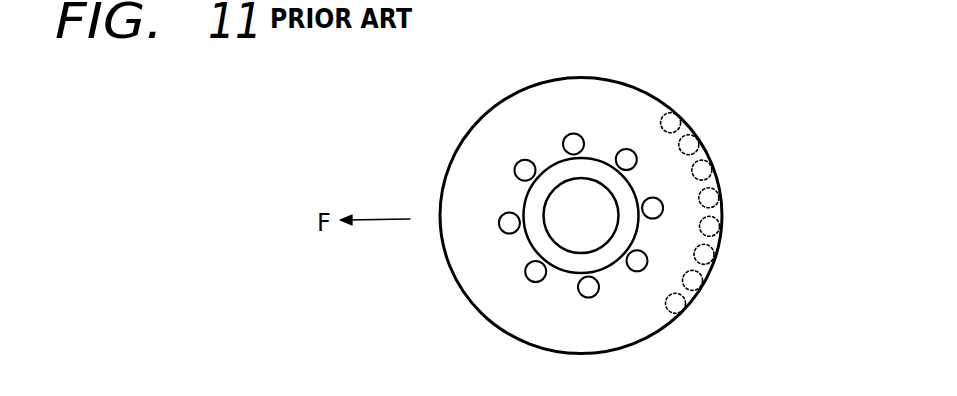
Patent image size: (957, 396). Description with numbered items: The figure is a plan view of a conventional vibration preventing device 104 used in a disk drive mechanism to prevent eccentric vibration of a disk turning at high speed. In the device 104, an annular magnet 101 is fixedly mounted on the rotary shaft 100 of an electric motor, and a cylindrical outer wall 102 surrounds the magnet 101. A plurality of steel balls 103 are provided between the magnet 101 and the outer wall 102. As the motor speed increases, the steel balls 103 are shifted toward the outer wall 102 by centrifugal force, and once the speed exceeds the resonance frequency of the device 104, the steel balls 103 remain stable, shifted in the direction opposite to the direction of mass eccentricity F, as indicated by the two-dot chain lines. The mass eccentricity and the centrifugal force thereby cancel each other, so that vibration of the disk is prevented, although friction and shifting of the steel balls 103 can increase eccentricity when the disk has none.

The rotary shaft 100 is at (572, 190).
The annular magnet 101 is at (527, 237).
The cylindrical outer wall 102 is at (448, 258).
The steel balls 103 is at (499, 222).
The vibration preventing device 104 is at (354, 166).